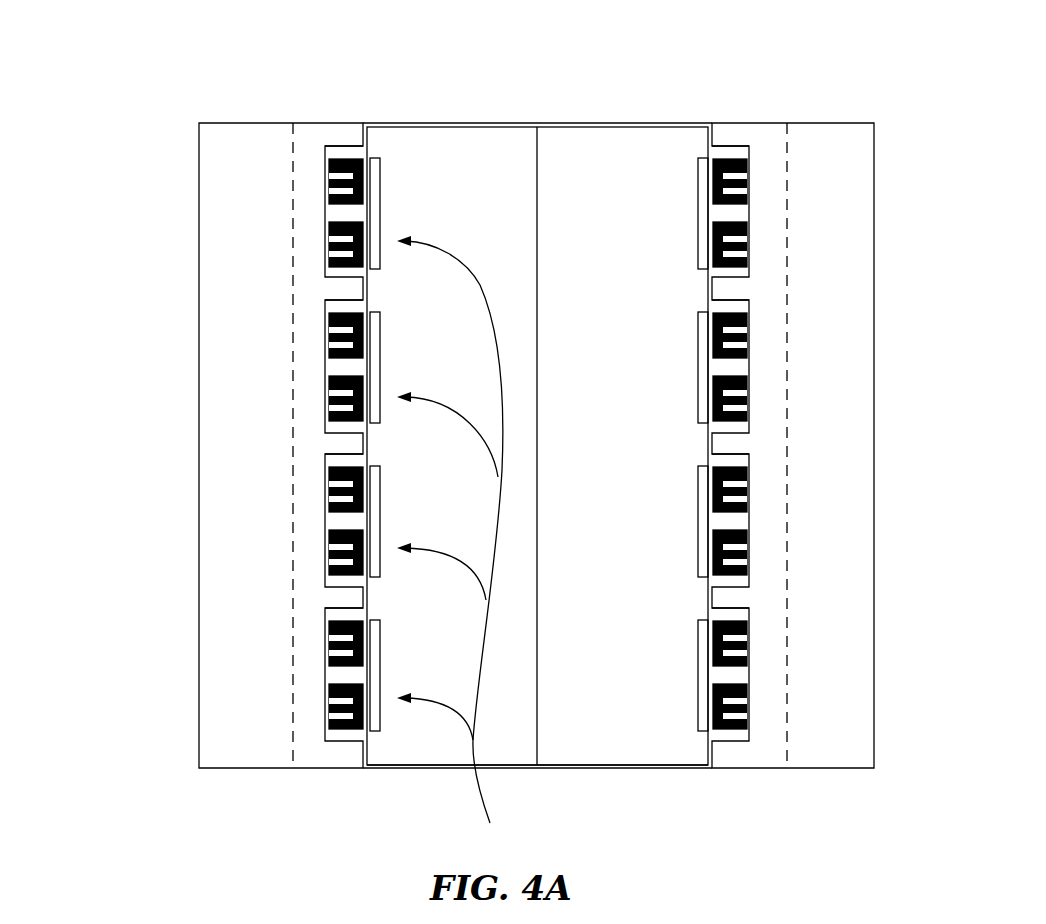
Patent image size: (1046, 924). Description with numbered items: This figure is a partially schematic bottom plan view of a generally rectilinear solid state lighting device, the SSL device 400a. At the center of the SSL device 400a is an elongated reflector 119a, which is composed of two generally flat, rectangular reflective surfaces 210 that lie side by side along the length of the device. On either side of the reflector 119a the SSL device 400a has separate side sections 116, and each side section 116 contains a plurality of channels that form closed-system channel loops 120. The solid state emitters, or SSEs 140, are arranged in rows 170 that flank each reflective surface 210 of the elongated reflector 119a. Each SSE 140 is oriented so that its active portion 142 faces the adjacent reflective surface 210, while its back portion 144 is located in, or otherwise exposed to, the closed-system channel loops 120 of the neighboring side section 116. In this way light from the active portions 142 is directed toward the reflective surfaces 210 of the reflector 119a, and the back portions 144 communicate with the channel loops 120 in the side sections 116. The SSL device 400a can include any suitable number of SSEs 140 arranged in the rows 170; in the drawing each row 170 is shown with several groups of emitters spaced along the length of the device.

The SSL device 400a is at (164, 77).
The side section 116 is at (222, 605).
The row 170 is at (350, 106).
The reflective surface 210 is at (593, 148).
The elongated reflector 119a is at (518, 787).
The active portion 142 is at (380, 222).
The closed-system channel loop 120 is at (333, 367).
The back portion 144 is at (333, 492).
The SSE 140 is at (451, 542).